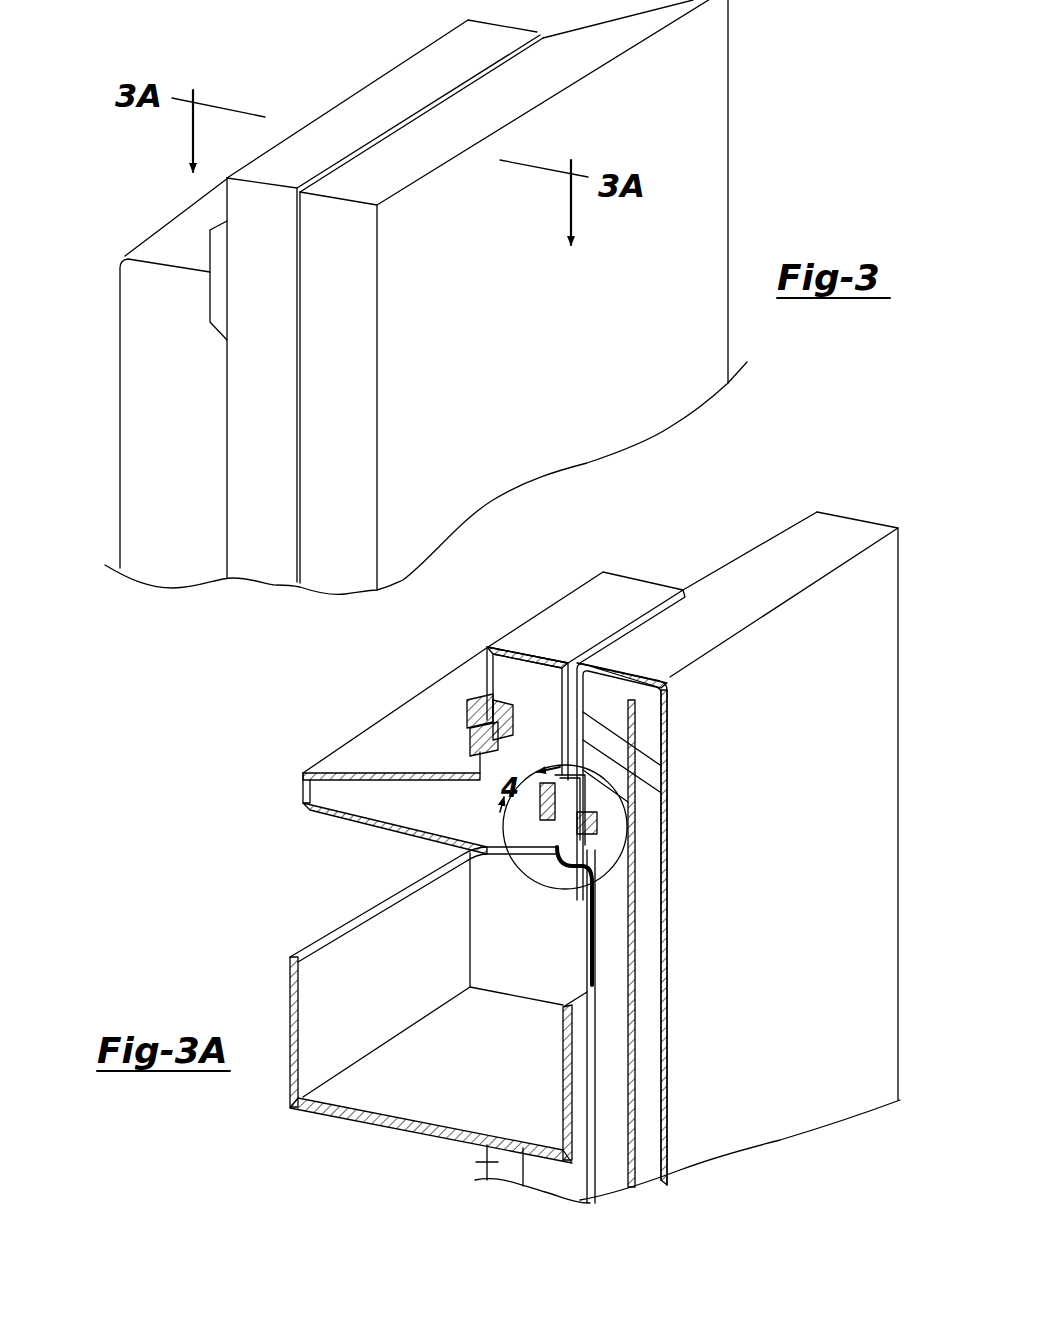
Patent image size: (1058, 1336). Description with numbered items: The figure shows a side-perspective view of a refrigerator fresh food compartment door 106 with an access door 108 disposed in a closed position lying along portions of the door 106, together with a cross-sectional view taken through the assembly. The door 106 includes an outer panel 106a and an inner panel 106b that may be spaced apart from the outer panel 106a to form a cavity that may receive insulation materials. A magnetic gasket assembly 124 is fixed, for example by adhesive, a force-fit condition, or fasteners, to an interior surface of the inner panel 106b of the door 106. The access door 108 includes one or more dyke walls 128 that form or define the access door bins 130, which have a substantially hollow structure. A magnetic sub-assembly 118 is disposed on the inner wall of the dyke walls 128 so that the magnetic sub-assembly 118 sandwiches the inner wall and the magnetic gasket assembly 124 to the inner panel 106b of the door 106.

In FIG. 3, the fresh food compartment door 106 is at (408, 84).
In FIG. 3A, the fresh food compartment door 106 is at (777, 869).
In FIG. 3A, the outer panel 106a is at (810, 1090).
In FIG. 3A, the inner panel 106b is at (610, 1110).
In FIG. 3, the access door 108 is at (147, 378).
In FIG. 3A, the access door 108 is at (487, 1162).
In FIG. 3A, the magnetic sub-assembly 118 is at (530, 805).
In FIG. 3A, the magnetic gasket assembly 124 is at (643, 797).
In FIG. 3A, the dyke walls 128 is at (513, 697).
In FIG. 3A, the access door bins 130 is at (395, 737).